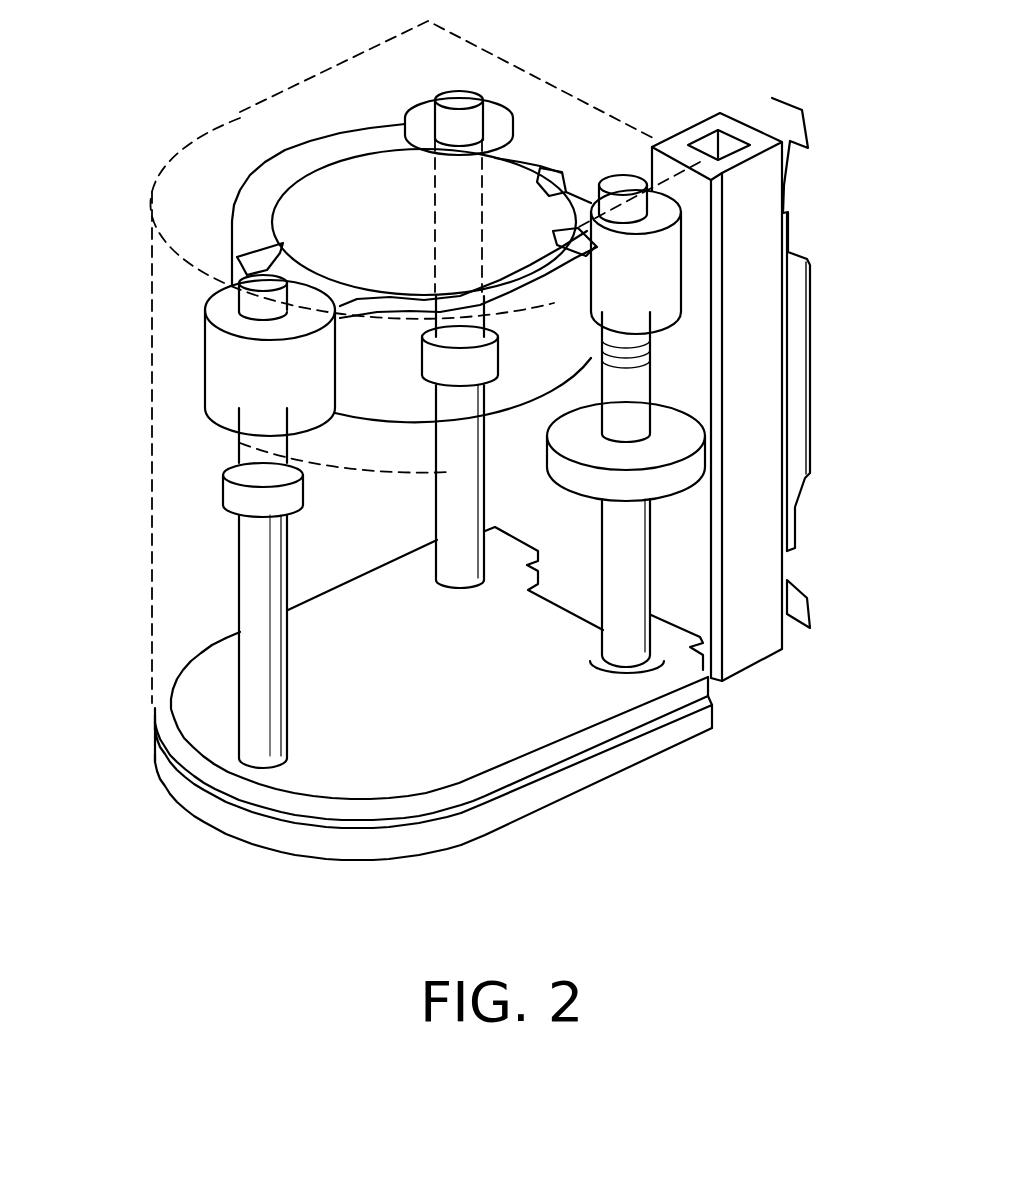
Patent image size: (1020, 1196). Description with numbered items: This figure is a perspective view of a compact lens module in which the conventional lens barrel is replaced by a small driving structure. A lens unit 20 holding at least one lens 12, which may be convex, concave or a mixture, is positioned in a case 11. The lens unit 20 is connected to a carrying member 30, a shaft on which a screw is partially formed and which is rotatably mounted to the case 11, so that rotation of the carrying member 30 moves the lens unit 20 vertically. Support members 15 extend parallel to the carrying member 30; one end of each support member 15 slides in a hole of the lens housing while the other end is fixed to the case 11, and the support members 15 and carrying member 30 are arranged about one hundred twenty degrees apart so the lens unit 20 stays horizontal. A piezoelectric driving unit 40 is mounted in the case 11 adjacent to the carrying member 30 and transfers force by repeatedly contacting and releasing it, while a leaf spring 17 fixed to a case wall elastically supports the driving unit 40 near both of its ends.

The case 11 is at (433, 739).
The lens 12 is at (318, 185).
The support member 15 is at (384, 429).
The spring 17 is at (845, 363).
The lens unit 20 is at (358, 267).
The carrying member 30 is at (658, 744).
The driving unit 40 is at (748, 425).